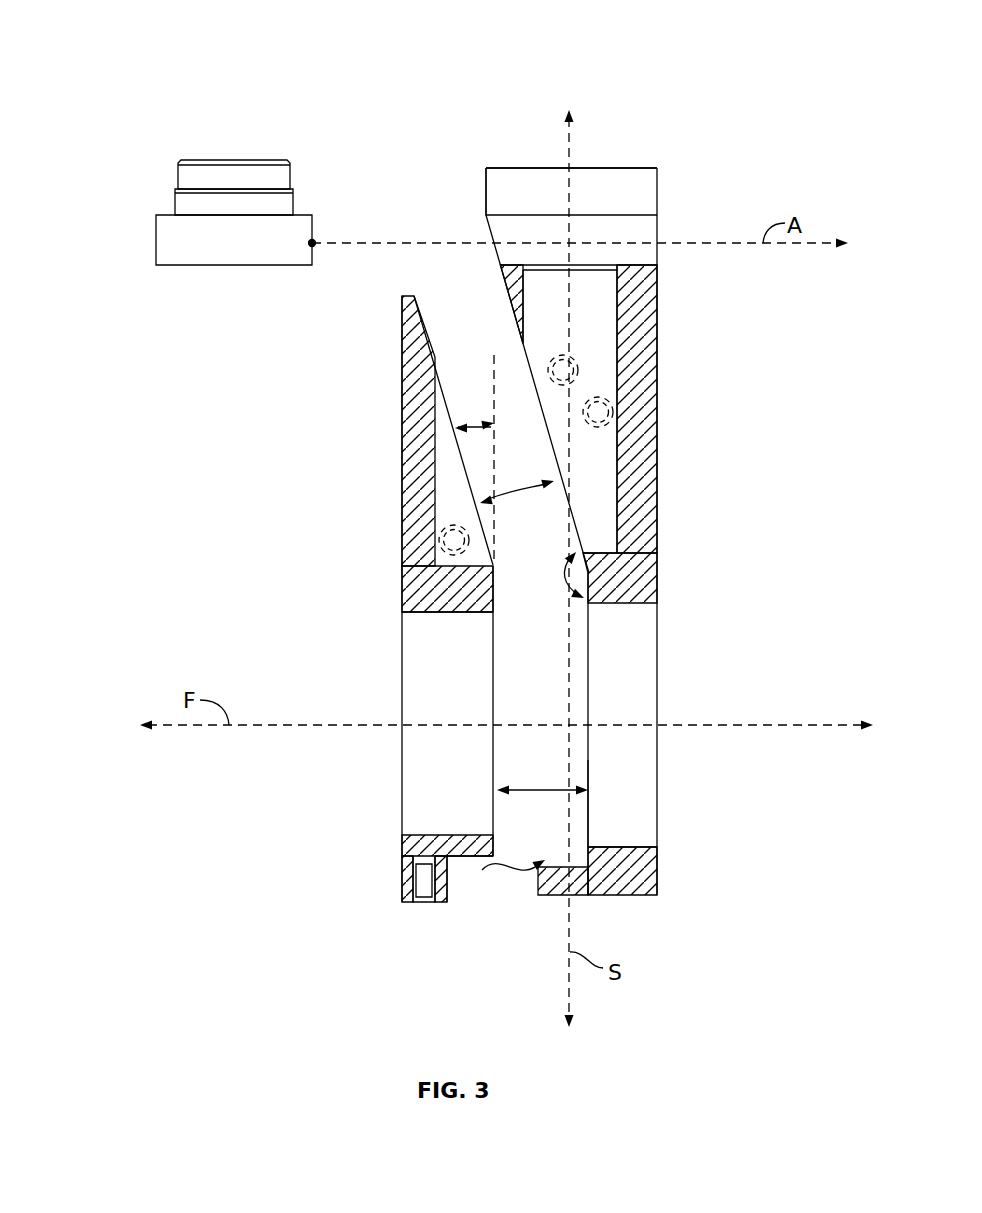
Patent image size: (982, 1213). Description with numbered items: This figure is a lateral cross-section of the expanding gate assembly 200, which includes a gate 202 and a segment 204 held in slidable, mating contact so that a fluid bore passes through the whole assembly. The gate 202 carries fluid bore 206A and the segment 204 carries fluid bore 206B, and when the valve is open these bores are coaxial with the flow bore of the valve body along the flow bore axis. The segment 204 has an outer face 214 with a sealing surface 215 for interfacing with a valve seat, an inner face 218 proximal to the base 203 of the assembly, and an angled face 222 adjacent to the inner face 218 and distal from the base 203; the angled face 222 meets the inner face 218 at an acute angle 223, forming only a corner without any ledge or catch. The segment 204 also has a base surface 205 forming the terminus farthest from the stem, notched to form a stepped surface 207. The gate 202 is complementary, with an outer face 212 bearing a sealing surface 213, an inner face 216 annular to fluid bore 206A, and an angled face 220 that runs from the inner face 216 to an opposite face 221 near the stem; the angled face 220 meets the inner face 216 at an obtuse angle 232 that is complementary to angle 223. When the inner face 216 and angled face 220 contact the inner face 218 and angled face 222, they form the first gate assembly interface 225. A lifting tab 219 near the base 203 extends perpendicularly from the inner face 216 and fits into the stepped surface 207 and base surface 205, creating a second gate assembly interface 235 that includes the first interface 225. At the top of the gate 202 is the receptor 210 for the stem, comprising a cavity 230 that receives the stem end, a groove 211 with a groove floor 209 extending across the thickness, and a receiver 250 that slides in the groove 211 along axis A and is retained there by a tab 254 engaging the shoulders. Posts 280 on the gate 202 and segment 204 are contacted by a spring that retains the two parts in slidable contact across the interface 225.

The gate assembly 200 is at (146, 46).
The receiver 250 is at (170, 136).
The tab 254 is at (158, 242).
The gate 202 is at (657, 293).
The base 203 is at (396, 863).
The segment 204 is at (402, 557).
The base surface 205 is at (405, 907).
The fluid bore 206A is at (631, 668).
The fluid bore 206B is at (439, 670).
The stepped surface 207 is at (457, 862).
The groove floor 209 is at (583, 265).
The receptor 210 is at (666, 224).
The groove 211 is at (670, 156).
The outer face 212 is at (663, 577).
The sealing surface 213 is at (657, 405).
The outer face 214 is at (398, 598).
The sealing surface 215 is at (398, 502).
The inner face 216 is at (573, 792).
The inner face 218 is at (500, 790).
The lifting tab 219 is at (577, 885).
The angled face 220 is at (497, 286).
The opposite face 221 is at (480, 192).
The angled face 222 is at (434, 343).
The angle 223 is at (480, 420).
The first gate assembly interface 225 is at (517, 492).
The cavity 230 is at (598, 484).
The angle 232 is at (562, 575).
The second gate assembly interface 235 is at (481, 862).
The posts 280 is at (560, 358).